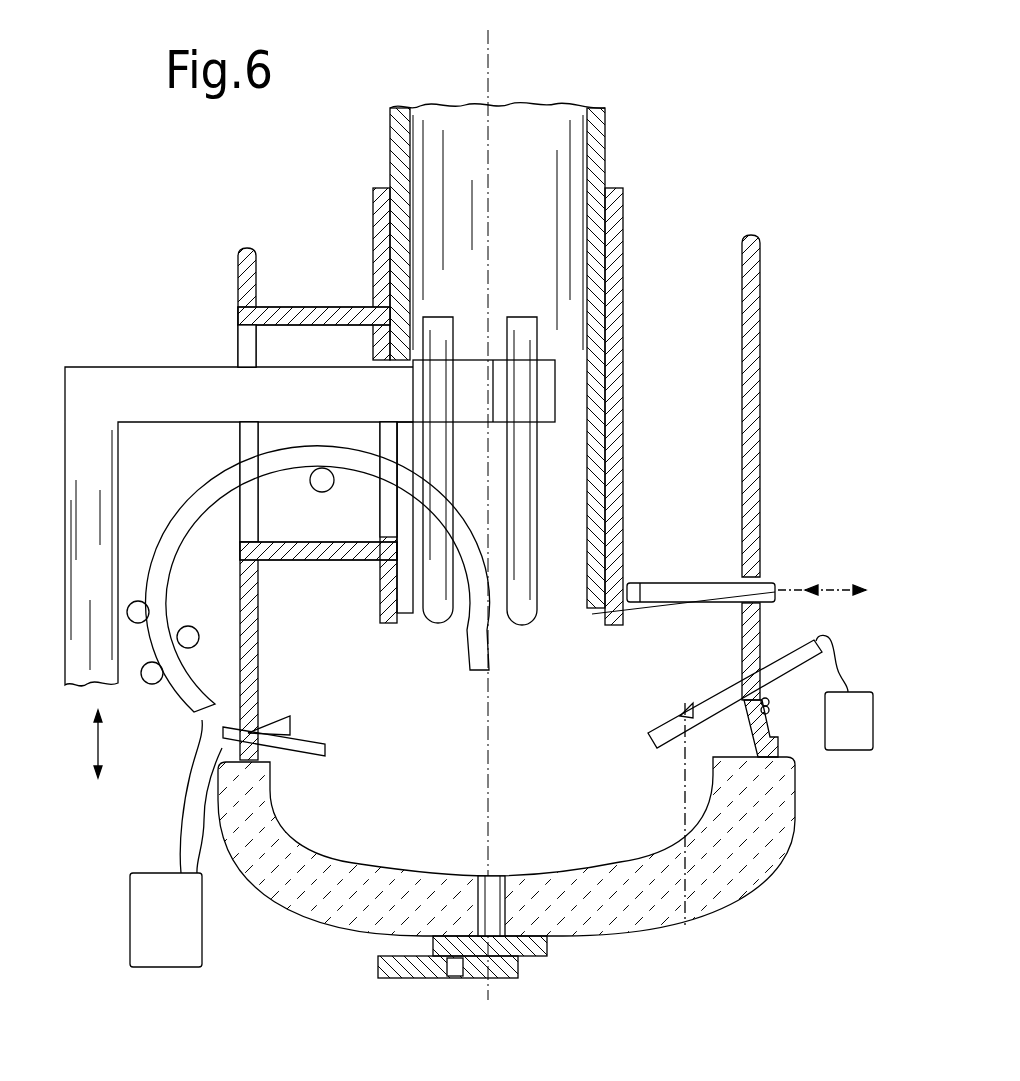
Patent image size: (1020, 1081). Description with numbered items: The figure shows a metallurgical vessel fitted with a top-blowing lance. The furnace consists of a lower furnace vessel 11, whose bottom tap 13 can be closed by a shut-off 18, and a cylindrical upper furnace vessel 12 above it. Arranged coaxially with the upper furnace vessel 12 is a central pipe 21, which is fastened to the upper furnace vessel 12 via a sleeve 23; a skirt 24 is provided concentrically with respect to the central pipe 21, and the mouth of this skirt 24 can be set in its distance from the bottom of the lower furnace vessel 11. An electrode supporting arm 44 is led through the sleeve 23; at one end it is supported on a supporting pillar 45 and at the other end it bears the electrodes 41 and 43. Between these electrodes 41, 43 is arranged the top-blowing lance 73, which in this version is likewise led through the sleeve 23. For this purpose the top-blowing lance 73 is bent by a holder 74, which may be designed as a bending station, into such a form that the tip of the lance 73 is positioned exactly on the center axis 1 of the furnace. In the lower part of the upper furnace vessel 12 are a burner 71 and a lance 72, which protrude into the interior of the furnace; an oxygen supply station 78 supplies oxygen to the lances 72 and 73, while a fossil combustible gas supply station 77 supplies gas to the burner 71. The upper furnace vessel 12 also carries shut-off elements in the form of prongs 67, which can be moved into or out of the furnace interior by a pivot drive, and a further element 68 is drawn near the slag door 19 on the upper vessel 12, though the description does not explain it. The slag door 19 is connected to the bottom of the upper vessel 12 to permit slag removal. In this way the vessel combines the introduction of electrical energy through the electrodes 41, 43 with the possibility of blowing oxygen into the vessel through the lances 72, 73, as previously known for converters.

The tube 1 is at (487, 163).
The central pipe 21 is at (627, 323).
The electrode 41 is at (440, 317).
The electrode 43 is at (520, 317).
The electrode supporting arm 44 is at (148, 385).
The supporting pillar 45 is at (85, 505).
The sleeve 23 is at (323, 560).
The top-blowing lance 73 is at (490, 670).
The holder 74 is at (320, 492).
The lance 72 is at (225, 736).
The oxygen supply station 78 is at (152, 945).
The lower furnace vessel 11 is at (783, 852).
The bottom tap 13 is at (503, 976).
The shut-off 18 is at (473, 978).
The upper furnace vessel 12 is at (760, 550).
The prongs 67 is at (660, 592).
The skirt 24 is at (822, 569).
The slag door 19 is at (775, 757).
The pivot 68 is at (759, 711).
The fossil combustible gas supply station 77 is at (845, 752).
The burner 71 is at (697, 848).